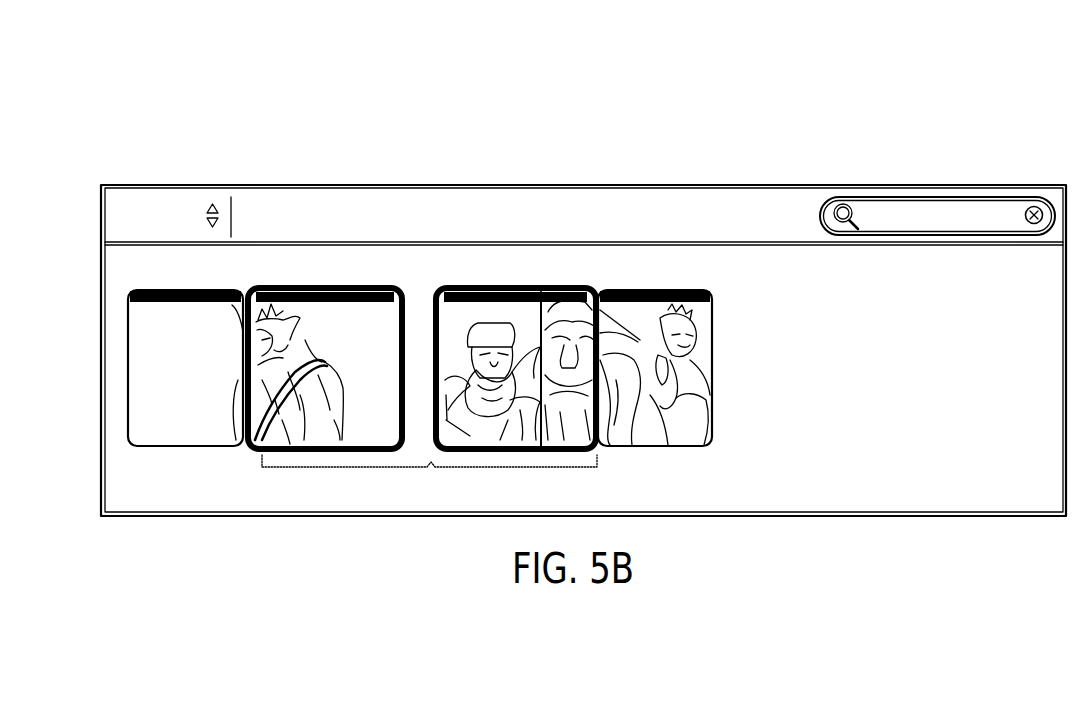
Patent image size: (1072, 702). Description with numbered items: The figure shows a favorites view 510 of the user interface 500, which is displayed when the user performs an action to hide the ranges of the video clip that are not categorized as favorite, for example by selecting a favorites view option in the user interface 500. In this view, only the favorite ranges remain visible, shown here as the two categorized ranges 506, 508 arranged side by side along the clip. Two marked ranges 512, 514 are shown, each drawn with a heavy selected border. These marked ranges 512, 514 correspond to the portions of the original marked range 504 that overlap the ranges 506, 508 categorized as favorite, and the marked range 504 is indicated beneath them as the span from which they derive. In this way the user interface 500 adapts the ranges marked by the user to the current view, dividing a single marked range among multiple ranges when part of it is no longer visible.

The user interface 500 is at (81, 72).
The favorites view 510 is at (346, 120).
The categorized range 506 is at (205, 275).
The marked range 512 is at (322, 285).
The marked range 514 is at (555, 285).
The categorized range 508 is at (663, 275).
The marked range 504 is at (429, 479).